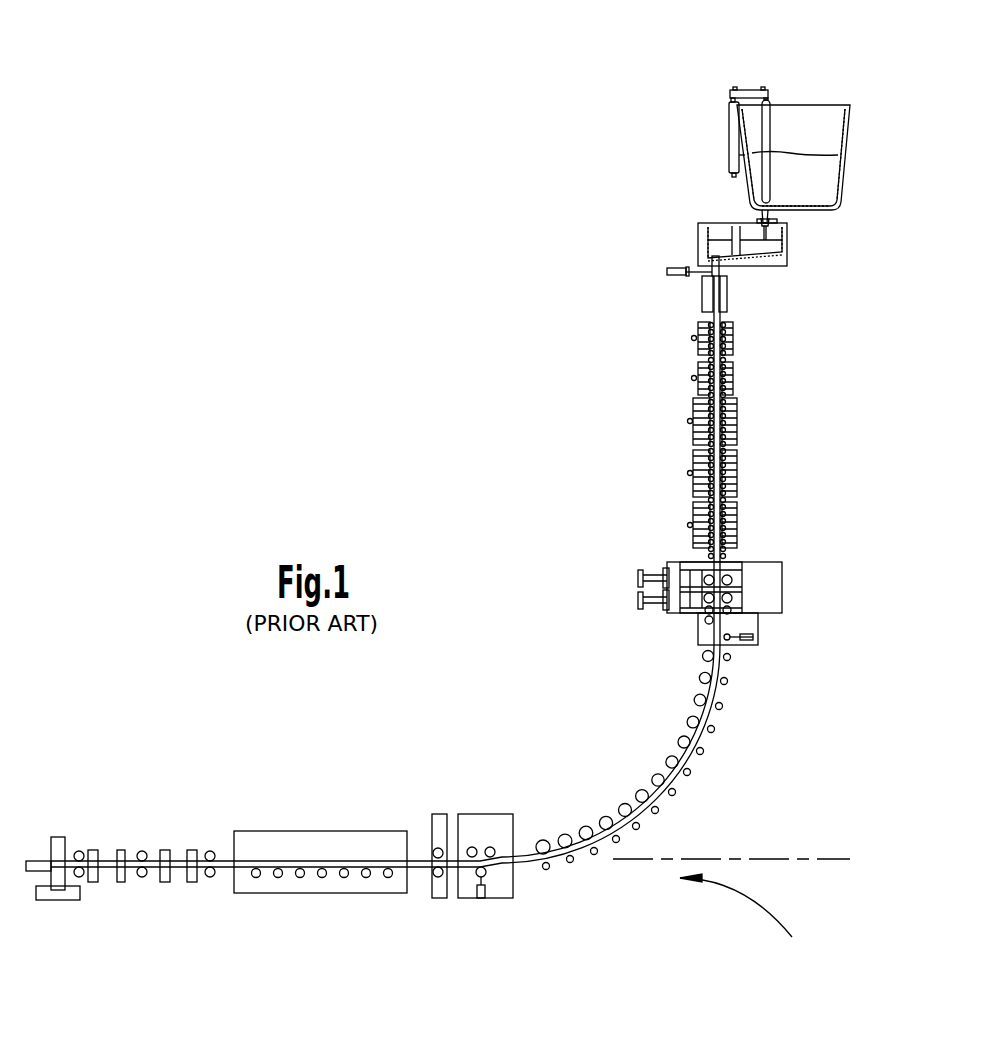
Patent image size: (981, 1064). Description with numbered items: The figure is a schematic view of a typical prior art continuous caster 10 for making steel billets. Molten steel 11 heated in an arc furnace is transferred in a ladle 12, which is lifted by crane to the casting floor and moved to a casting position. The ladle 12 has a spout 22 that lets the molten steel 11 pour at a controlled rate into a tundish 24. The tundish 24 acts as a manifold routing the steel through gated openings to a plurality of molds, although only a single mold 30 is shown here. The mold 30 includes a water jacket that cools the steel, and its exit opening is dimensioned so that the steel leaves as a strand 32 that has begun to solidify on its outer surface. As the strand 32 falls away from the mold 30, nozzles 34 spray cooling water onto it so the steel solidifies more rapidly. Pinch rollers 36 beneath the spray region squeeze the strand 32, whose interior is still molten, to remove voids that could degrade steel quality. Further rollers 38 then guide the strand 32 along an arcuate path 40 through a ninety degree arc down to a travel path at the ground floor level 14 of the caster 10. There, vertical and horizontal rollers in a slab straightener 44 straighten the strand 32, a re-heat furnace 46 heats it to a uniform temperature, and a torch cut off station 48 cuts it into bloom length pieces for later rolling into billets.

The continuous caster 10 is at (452, 373).
The molten steel 11 is at (802, 183).
The ladle 12 is at (847, 120).
The ground floor level 14 is at (746, 922).
The spout 22 is at (763, 218).
The tundish 24 is at (698, 238).
The mold 30 is at (707, 295).
The strand 32 is at (715, 315).
The nozzles 34 is at (702, 452).
The pinch rollers 36 is at (733, 579).
The rollers 38 is at (682, 740).
The arcuate path 40 is at (672, 808).
The slab straightener 44 is at (500, 885).
The re-heat furnace 46 is at (312, 847).
The torch cut off station 48 is at (55, 893).